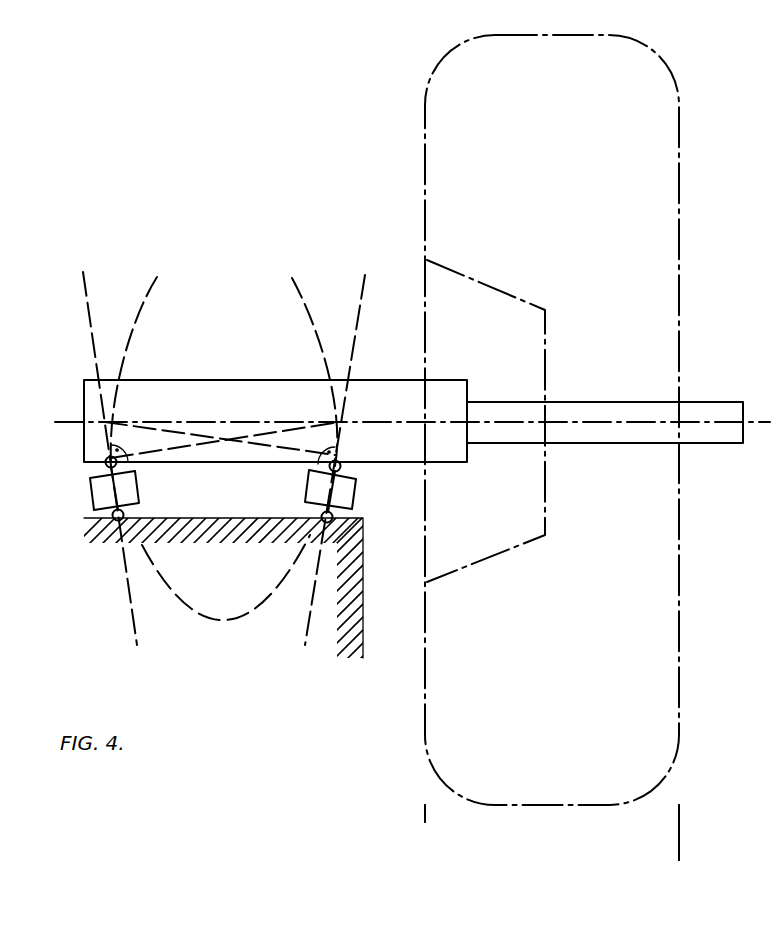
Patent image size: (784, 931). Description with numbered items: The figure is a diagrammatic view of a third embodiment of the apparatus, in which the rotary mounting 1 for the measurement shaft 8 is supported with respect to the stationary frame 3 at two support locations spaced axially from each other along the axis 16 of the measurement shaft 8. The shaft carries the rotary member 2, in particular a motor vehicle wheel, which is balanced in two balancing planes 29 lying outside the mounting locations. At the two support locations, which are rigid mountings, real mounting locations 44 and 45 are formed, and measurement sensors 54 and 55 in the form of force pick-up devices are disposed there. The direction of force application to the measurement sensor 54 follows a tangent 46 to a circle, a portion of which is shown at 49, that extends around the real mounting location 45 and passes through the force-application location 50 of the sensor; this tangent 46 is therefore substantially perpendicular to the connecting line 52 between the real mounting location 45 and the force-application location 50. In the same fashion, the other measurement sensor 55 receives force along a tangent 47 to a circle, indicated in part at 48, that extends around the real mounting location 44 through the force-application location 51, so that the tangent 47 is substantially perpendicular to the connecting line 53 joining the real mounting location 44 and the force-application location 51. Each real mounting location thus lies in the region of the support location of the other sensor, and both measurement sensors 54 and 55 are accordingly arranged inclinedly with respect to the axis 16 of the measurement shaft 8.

The rotary mounting 1 is at (236, 388).
The rotary member 2 is at (668, 103).
The stationary frame 3 is at (228, 587).
The measurement shaft 8 is at (712, 445).
The axis of the measurement shaft 16 is at (620, 422).
The balancing planes 29 is at (423, 806).
The real mounting location 44 is at (105, 421).
The real mounting location 45 is at (340, 421).
The tangent 46 is at (85, 292).
The tangent 47 is at (363, 300).
The portion of a circle 48 is at (306, 290).
The portion of a circle 49 is at (157, 277).
The force-application location 50 is at (106, 456).
The force-application location 51 is at (340, 460).
The connecting line 52 is at (180, 450).
The connecting line 53 is at (263, 452).
The measurement sensor 54 is at (98, 490).
The measurement sensor 55 is at (346, 497).